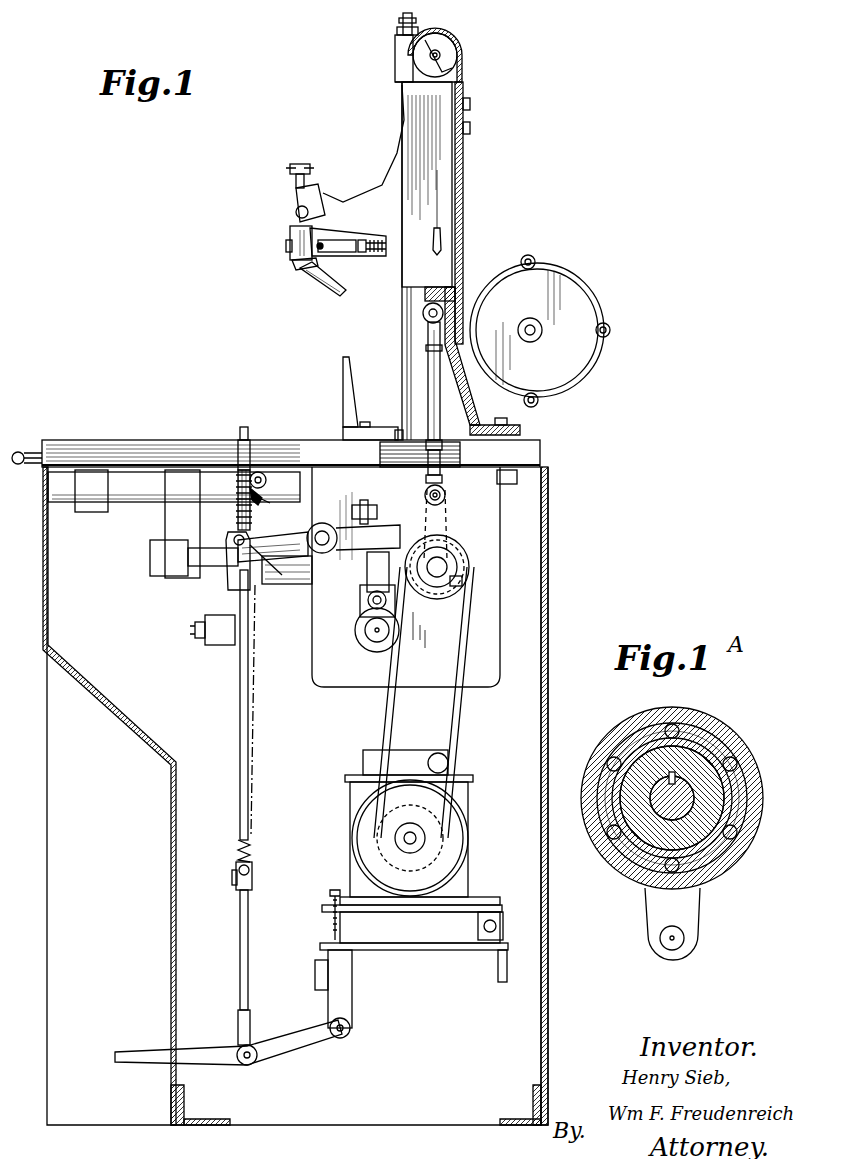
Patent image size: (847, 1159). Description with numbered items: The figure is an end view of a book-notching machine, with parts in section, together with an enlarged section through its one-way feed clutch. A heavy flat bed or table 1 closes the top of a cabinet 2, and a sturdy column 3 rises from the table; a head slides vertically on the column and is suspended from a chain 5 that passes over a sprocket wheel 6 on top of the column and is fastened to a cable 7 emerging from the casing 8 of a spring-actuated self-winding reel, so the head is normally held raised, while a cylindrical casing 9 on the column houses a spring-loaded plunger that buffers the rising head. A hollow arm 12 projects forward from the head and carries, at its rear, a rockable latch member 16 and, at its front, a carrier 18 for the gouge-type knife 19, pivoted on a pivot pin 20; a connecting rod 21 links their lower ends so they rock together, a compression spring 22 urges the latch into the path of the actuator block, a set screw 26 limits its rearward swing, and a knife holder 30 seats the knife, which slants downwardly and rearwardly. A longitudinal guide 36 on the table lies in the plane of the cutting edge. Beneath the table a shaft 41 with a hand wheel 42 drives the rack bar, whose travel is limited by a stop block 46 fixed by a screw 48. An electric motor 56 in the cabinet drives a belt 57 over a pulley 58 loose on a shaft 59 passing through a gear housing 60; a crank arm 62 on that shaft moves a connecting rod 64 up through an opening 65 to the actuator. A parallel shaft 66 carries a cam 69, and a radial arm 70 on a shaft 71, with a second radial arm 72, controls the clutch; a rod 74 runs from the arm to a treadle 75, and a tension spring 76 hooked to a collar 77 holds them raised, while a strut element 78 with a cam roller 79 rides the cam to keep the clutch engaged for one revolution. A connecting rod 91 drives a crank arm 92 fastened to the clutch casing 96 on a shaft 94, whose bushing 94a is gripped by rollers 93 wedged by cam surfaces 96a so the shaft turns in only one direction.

In FIG. 1, the bed or table 1 is at (122, 442).
In FIG. 1, the cabinet 2 is at (98, 702).
In FIG. 1, the column 3 is at (436, 206).
In FIG. 1, the chain 5 is at (466, 160).
In FIG. 1, the sprocket wheel 6 is at (452, 48).
In FIG. 1, the cable 7 is at (468, 282).
In FIG. 1, the casing of self winding reel 8 is at (526, 298).
In FIG. 1, the cylindrical casing 9 is at (396, 60).
In FIG. 1, the hollow arm 12 is at (362, 214).
In FIG. 1, the latch member 16 is at (237, 508).
In FIG. 1, the carrier 18 is at (288, 232).
In FIG. 1, the blade 19 is at (318, 285).
In FIG. 1, the pivot pin 20 is at (296, 212).
In FIG. 1, the connecting rod 21 is at (340, 254).
In FIG. 1, the compression spring 22 is at (376, 256).
In FIG. 1, the set screw 26 is at (290, 178).
In FIG. 1, the knife holder 30 is at (296, 268).
In FIG. 1, the longitudinal guide 36 is at (352, 372).
In FIG. 1, the shaft 41 is at (132, 505).
In FIG. 1, the hand wheel 42 is at (42, 503).
In FIG. 1, the stop block 46 is at (252, 452).
In FIG. 1, the screw 48 is at (242, 437).
In FIG. 1, the electric motor 56 is at (468, 854).
In FIG. 1, the belt 57 is at (460, 733).
In FIG. 1, the pulley 58 is at (462, 548).
In FIG. 1, the shaft 59 is at (448, 566).
In FIG. 1, the gear housing 60 is at (492, 608).
In FIG. 1, the crank arm 62 is at (445, 515).
In FIG. 1, the connecting rod 64 is at (415, 410).
In FIG. 1, the opening 65 is at (410, 458).
In FIG. 1, the shaft 66 is at (372, 636).
In FIG. 1, the cam 69 is at (398, 632).
In FIG. 1, the radial arm 70 is at (385, 528).
In FIG. 1, the shaft 71 is at (324, 528).
In FIG. 1, the radial arm 72 is at (304, 560).
In FIG. 1, the rod 74 is at (240, 770).
In FIG. 1, the treadle 75 is at (132, 1052).
In FIG. 1, the tension spring 76 is at (256, 744).
In FIG. 1, the collar 77 is at (254, 878).
In FIG. 1, the strut element 78 is at (368, 572).
In FIG. 1, the cam roller 79 is at (366, 602).
In FIG. 1, the connecting rod 91 is at (218, 648).
In FIG. 1A, the crank arm 92 is at (690, 906).
In FIG. 1A, the roller 93 is at (738, 752).
In FIG. 1, the shaft 94 is at (225, 565).
In FIG. 1A, the shaft 94 is at (622, 845).
In FIG. 1A, the sleeve or bushing 94a is at (718, 818).
In FIG. 1, the clutch casing 96 is at (281, 564).
In FIG. 1A, the clutch casing 96 is at (732, 716).
In FIG. 1A, the cam surface 96a is at (730, 780).